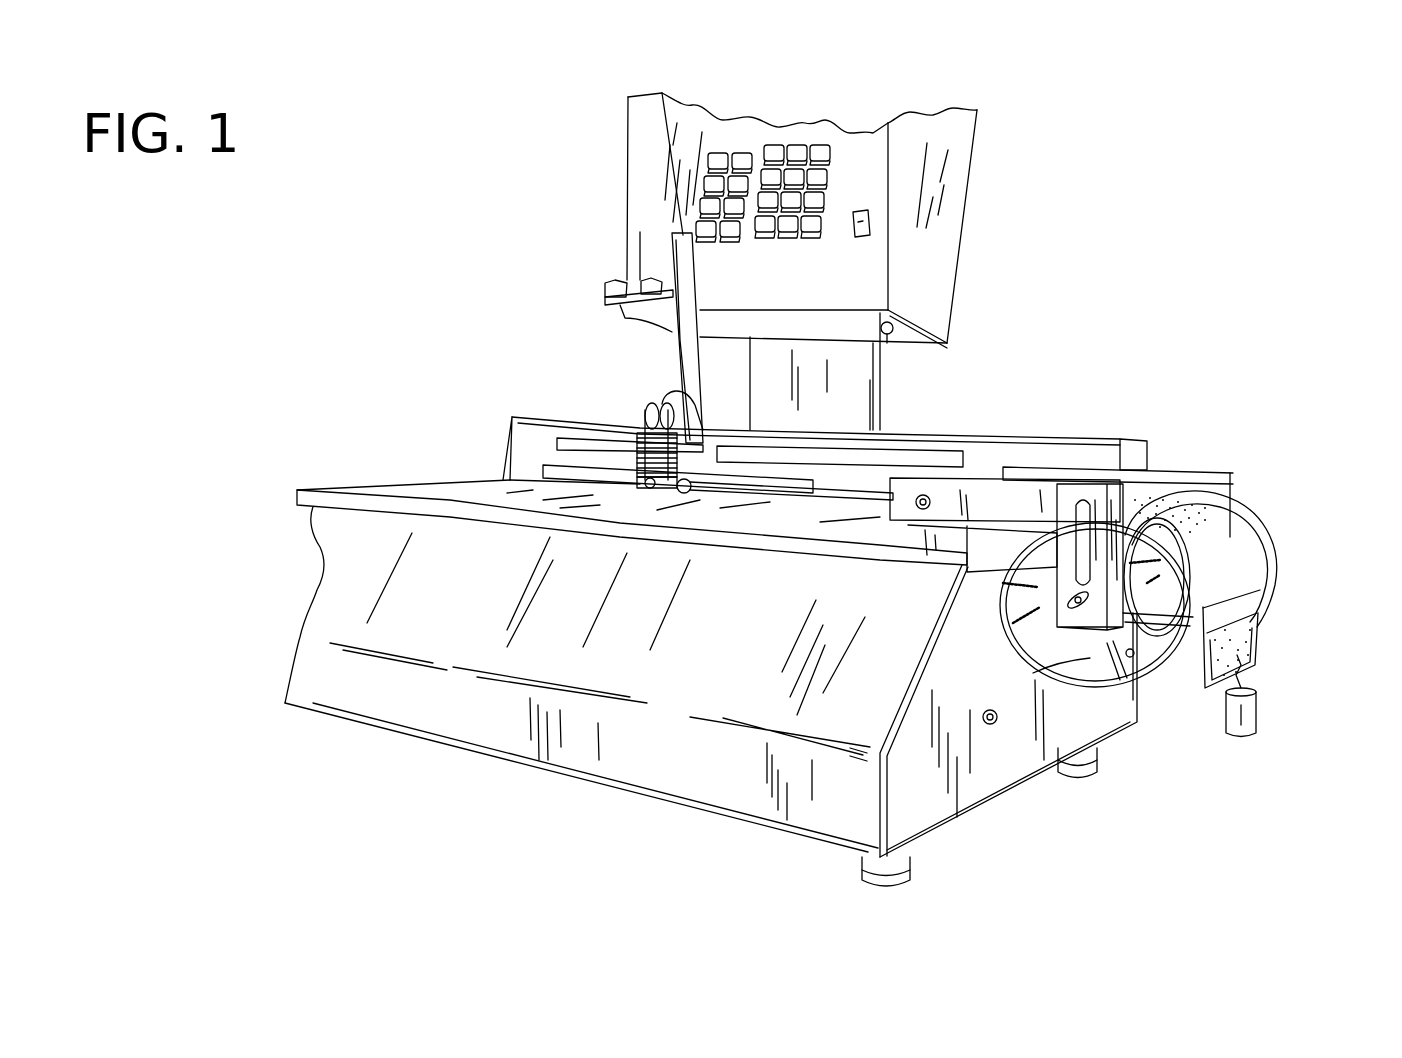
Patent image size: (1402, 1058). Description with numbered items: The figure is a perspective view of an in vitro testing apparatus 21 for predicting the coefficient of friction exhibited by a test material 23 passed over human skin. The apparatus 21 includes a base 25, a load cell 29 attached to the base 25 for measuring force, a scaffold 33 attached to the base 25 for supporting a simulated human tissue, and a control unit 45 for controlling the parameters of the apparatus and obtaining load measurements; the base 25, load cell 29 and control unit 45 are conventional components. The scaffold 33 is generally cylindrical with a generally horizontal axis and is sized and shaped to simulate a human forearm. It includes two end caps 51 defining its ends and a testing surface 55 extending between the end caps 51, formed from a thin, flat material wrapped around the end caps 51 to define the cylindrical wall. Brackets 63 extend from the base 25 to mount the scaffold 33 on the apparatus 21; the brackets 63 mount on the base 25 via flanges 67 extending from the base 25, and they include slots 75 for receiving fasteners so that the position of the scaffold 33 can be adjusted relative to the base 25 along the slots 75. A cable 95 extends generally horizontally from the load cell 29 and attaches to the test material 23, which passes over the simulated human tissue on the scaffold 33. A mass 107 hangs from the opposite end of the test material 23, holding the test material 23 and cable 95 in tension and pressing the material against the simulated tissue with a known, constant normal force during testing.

The testing apparatus 21 is at (827, 489).
The test material 23 is at (1240, 600).
The base 25 is at (643, 767).
The load cell 29 is at (640, 447).
The scaffold 33 is at (1170, 670).
The control unit 45 is at (940, 248).
The end caps 51 is at (1087, 677).
The testing surface 55 is at (1250, 538).
The brackets 63 is at (990, 497).
The flanges 67 is at (953, 540).
The slots 75 is at (1083, 500).
The cable 95 is at (787, 493).
The mass 107 is at (1263, 713).